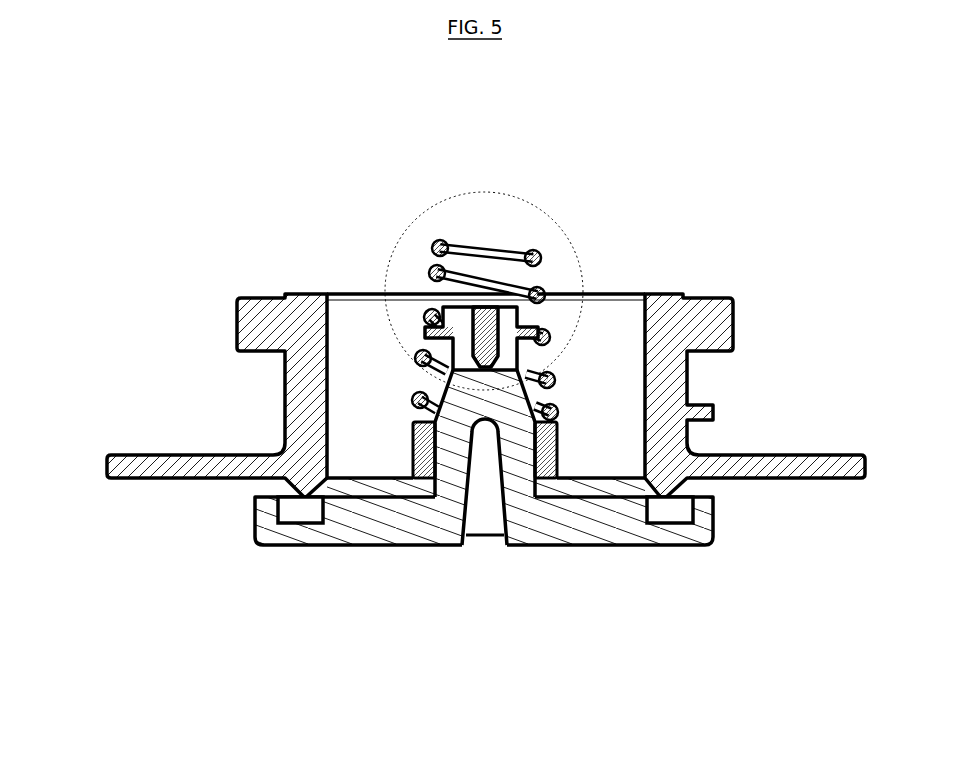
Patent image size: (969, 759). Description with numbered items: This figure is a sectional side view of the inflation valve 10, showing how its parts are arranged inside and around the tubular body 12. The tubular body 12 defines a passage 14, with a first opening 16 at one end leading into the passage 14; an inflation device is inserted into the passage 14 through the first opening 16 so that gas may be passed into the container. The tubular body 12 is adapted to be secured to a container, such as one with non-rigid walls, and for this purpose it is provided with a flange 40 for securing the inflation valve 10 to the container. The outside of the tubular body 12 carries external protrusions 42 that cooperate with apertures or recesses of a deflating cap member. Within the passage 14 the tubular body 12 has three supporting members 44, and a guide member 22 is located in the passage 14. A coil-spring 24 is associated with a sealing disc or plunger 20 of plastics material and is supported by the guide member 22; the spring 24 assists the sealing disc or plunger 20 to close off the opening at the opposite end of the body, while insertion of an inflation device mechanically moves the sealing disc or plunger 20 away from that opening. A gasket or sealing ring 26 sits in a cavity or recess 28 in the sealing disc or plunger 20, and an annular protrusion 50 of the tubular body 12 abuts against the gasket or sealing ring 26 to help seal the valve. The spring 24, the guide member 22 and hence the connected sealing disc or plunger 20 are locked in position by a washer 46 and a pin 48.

The inflation valve 10 is at (135, 25).
The tubular body 12 is at (680, 378).
The passage 14 is at (620, 330).
The first opening 16 is at (598, 287).
The sealing disc or plunger 20 is at (248, 520).
The guide member 22 is at (510, 414).
The coil-spring 24 is at (437, 230).
The gasket or sealing ring 26 is at (298, 512).
The cavity or recess 28 is at (298, 525).
The flange 40 is at (100, 470).
The external protrusions 42 is at (262, 335).
The supporting members 44 is at (385, 483).
The washer 46 is at (410, 336).
The pin 48 is at (489, 303).
The annular protrusion 50 is at (673, 487).